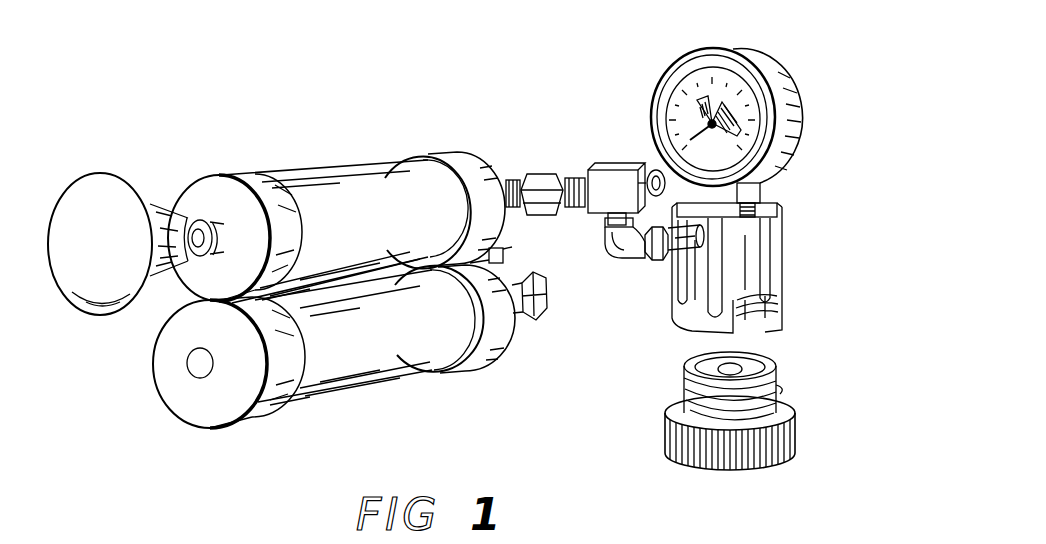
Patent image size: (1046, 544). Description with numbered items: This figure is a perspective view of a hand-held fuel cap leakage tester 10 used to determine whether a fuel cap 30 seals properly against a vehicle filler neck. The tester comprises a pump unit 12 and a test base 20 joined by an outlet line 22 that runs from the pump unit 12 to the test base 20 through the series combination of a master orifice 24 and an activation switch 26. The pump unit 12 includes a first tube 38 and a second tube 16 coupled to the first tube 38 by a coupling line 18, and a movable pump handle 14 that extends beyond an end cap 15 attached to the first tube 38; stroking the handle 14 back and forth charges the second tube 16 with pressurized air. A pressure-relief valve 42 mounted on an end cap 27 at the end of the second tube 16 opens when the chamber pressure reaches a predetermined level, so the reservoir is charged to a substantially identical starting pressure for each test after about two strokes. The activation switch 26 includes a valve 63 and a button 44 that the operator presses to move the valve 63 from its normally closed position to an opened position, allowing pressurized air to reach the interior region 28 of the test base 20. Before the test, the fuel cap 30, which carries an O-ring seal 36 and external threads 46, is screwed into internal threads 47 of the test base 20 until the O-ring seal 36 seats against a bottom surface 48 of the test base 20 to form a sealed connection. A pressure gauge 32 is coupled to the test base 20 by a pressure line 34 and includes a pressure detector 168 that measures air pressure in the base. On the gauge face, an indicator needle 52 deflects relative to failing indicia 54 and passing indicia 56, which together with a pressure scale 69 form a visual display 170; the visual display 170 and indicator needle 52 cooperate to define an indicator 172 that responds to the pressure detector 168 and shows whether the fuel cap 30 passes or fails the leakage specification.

The fuel cap leakage tester 10 is at (571, 112).
The pump unit 12 is at (303, 158).
The pump handle 14 is at (108, 200).
The end cap 15 is at (213, 197).
The second tube 16 is at (345, 372).
The coupling line 18 is at (505, 254).
The test base 20 is at (783, 250).
The outlet line 22 is at (512, 176).
The master orifice 24 is at (540, 171).
The activation switch 26 is at (615, 160).
The end cap 27 is at (490, 347).
The interior region 28 is at (744, 334).
The fuel cap 30 is at (687, 463).
The pressure gauge 32 is at (768, 68).
The pressure line 34 is at (759, 193).
The O-ring seal 36 is at (664, 422).
The first tube 38 is at (368, 195).
The pressure-relief valve 42 is at (530, 320).
The button 44 is at (644, 176).
The external threads 46 is at (781, 386).
The internal threads 47 is at (744, 326).
The bottom surface 48 is at (776, 338).
The indicator needle 52 is at (707, 134).
The failing indicia 54 is at (694, 110).
The passing indicia 56 is at (738, 110).
The valve 63 is at (623, 216).
The pressure scale 69 is at (756, 137).
The pressure detector 168 is at (768, 174).
The visual display 170 is at (751, 117).
The indicator 172 is at (798, 63).